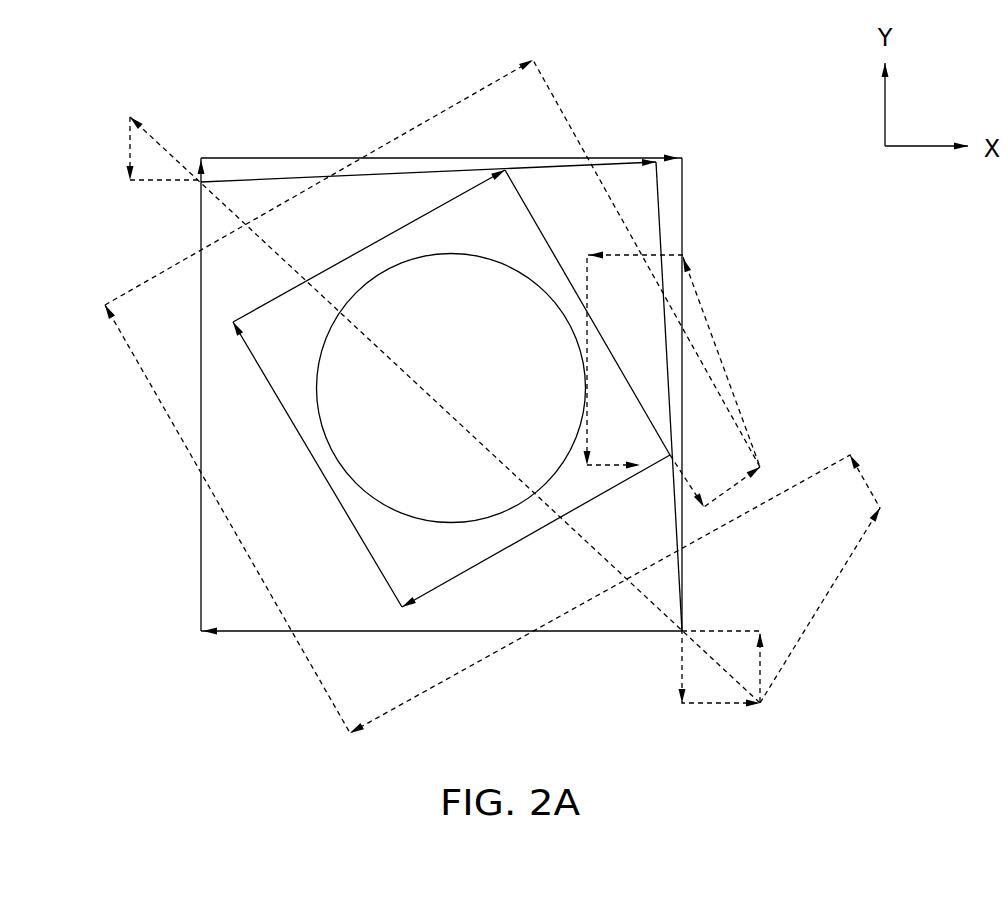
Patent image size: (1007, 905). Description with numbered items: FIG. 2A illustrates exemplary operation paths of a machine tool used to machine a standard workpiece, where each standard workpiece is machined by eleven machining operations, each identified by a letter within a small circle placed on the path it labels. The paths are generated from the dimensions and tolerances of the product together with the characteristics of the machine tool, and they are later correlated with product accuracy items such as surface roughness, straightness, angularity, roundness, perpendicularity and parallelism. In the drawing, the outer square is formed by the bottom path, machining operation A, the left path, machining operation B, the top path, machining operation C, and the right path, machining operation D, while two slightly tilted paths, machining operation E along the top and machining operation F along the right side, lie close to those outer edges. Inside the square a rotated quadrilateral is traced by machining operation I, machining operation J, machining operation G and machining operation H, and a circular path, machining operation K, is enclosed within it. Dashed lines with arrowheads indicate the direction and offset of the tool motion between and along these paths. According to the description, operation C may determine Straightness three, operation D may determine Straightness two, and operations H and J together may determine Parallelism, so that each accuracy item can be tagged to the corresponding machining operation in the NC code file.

The machining operation A is at (441, 631).
The machining operation B is at (201, 394).
The machining operation C is at (441, 162).
The machining operation D is at (682, 394).
The machining operation E is at (428, 180).
The machining operation F is at (659, 396).
The machining operation G is at (536, 531).
The machining operation H is at (317, 464).
The machining operation I is at (369, 246).
The machining operation J is at (587, 312).
The machining operation K is at (451, 378).